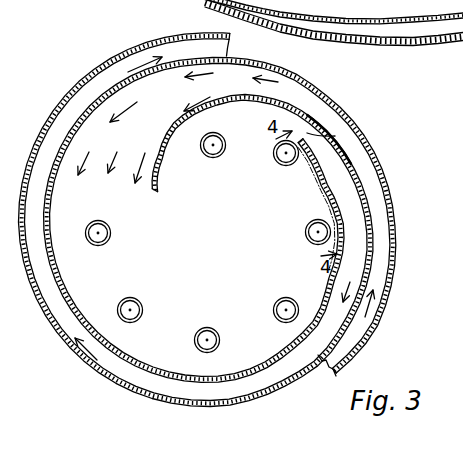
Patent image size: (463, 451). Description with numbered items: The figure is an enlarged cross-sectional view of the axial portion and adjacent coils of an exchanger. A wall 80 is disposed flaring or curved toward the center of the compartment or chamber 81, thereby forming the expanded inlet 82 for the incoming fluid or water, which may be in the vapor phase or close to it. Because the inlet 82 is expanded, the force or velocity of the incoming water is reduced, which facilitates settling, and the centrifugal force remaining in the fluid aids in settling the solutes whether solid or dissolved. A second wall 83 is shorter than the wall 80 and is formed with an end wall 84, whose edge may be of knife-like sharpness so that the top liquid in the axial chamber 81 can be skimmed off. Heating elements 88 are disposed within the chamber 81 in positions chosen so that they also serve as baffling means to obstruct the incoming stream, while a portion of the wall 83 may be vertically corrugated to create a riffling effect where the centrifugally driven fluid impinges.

The wall 80 is at (160, 168).
The compartment or chamber 81 is at (252, 244).
The expanded inlet 82 is at (148, 141).
The wall 83 is at (323, 183).
The end wall 84 is at (335, 136).
The heating elements 88 is at (277, 162).